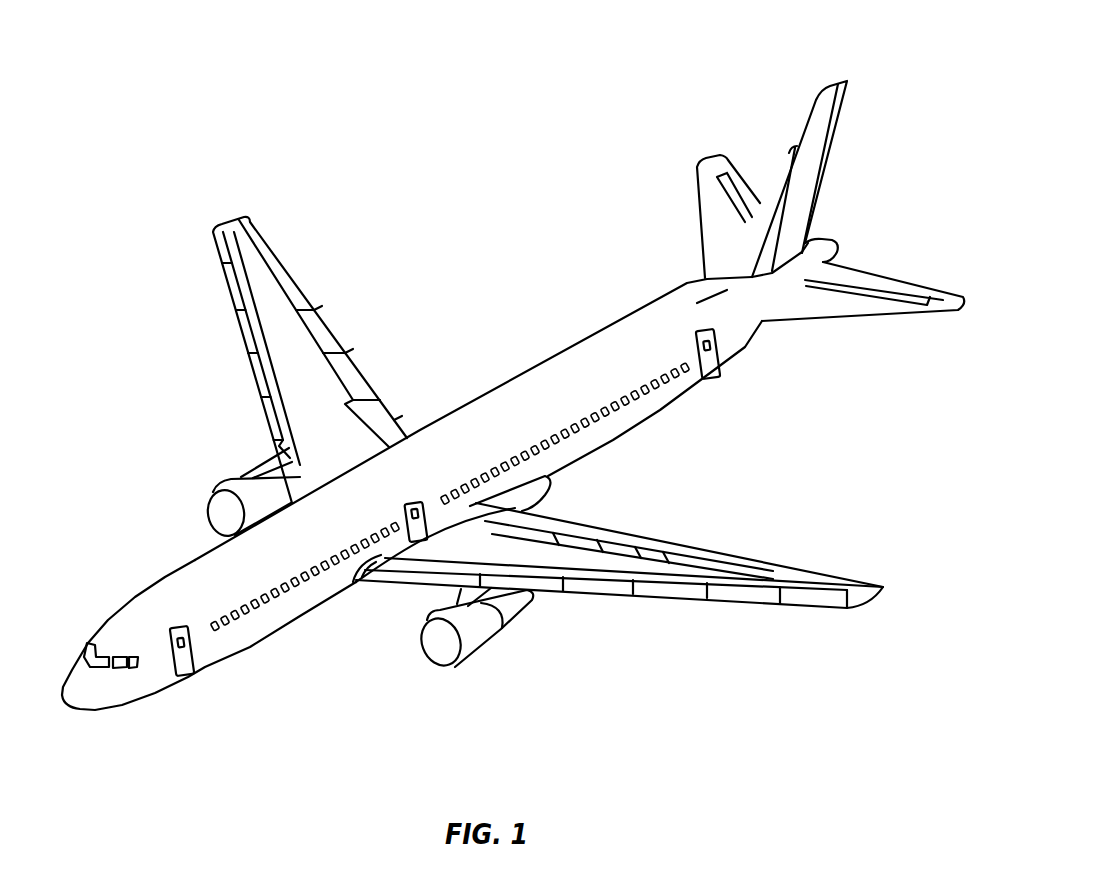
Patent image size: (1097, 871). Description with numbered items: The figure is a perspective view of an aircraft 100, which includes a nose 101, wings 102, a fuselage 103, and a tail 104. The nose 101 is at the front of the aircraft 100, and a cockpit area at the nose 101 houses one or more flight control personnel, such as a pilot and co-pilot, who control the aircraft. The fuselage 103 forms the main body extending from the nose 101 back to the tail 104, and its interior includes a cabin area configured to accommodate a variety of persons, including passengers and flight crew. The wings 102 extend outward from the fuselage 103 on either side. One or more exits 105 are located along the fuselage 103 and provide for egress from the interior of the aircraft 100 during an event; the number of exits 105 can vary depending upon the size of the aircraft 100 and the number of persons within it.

The aircraft 100 is at (454, 301).
The nose 101 is at (87, 716).
The wings 102 is at (264, 197).
The fuselage 103 is at (585, 455).
The tail 104 is at (858, 76).
The exits 105 is at (186, 662).